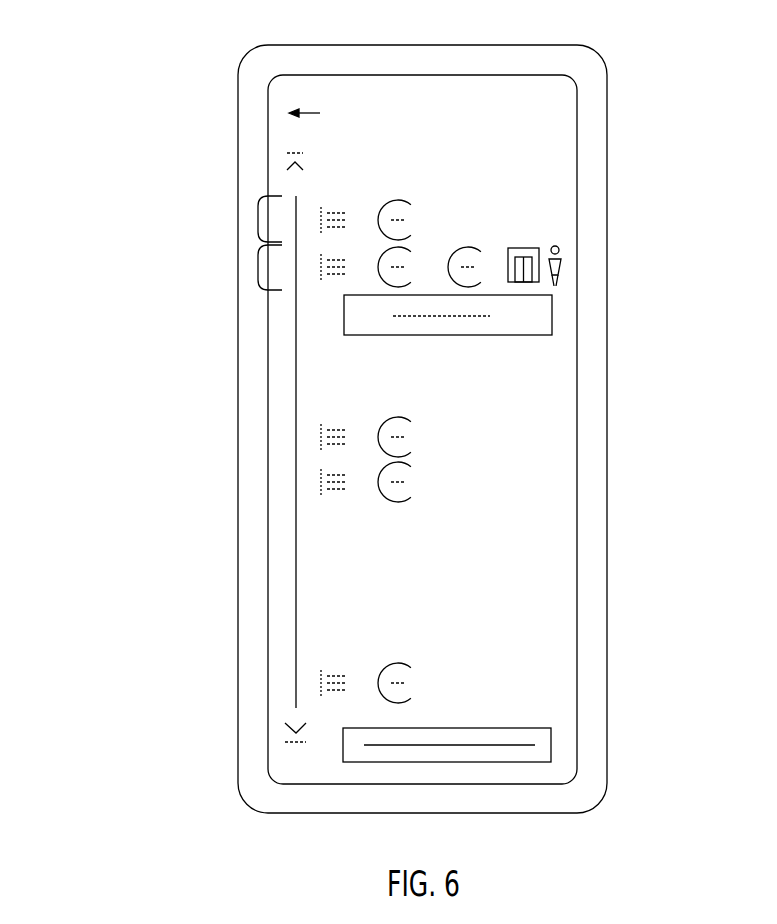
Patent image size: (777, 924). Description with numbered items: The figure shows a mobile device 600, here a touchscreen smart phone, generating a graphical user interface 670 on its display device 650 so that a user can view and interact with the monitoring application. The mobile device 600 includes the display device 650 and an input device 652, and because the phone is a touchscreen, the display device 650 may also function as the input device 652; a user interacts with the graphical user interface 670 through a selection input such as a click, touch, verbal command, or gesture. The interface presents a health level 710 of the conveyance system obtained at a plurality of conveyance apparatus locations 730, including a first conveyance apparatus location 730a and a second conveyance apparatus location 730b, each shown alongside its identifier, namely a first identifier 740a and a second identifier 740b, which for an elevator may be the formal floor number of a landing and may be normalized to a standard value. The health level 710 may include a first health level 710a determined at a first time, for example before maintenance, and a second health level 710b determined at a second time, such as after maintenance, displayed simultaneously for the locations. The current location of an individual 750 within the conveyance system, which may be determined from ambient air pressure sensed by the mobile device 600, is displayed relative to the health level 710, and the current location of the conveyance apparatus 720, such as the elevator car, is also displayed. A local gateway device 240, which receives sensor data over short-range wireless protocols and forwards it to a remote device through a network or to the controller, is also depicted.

The mobile device 600 is at (607, 122).
The display device 650 is at (242, 62).
The input device 652 is at (268, 135).
The graphical user interface 670 is at (578, 411).
The conveyance apparatus locations 730 is at (190, 150).
The first conveyance apparatus location 730a is at (257, 267).
The second conveyance apparatus location 730b is at (257, 219).
The first identifier 740a is at (320, 305).
The second identifier 740b is at (325, 183).
The health level 710 is at (538, 343).
The first health level 710a is at (407, 198).
The second health level 710b is at (479, 236).
The conveyance apparatus 720 is at (539, 243).
The individual 750 is at (565, 286).
The local gateway device 240 is at (364, 700).